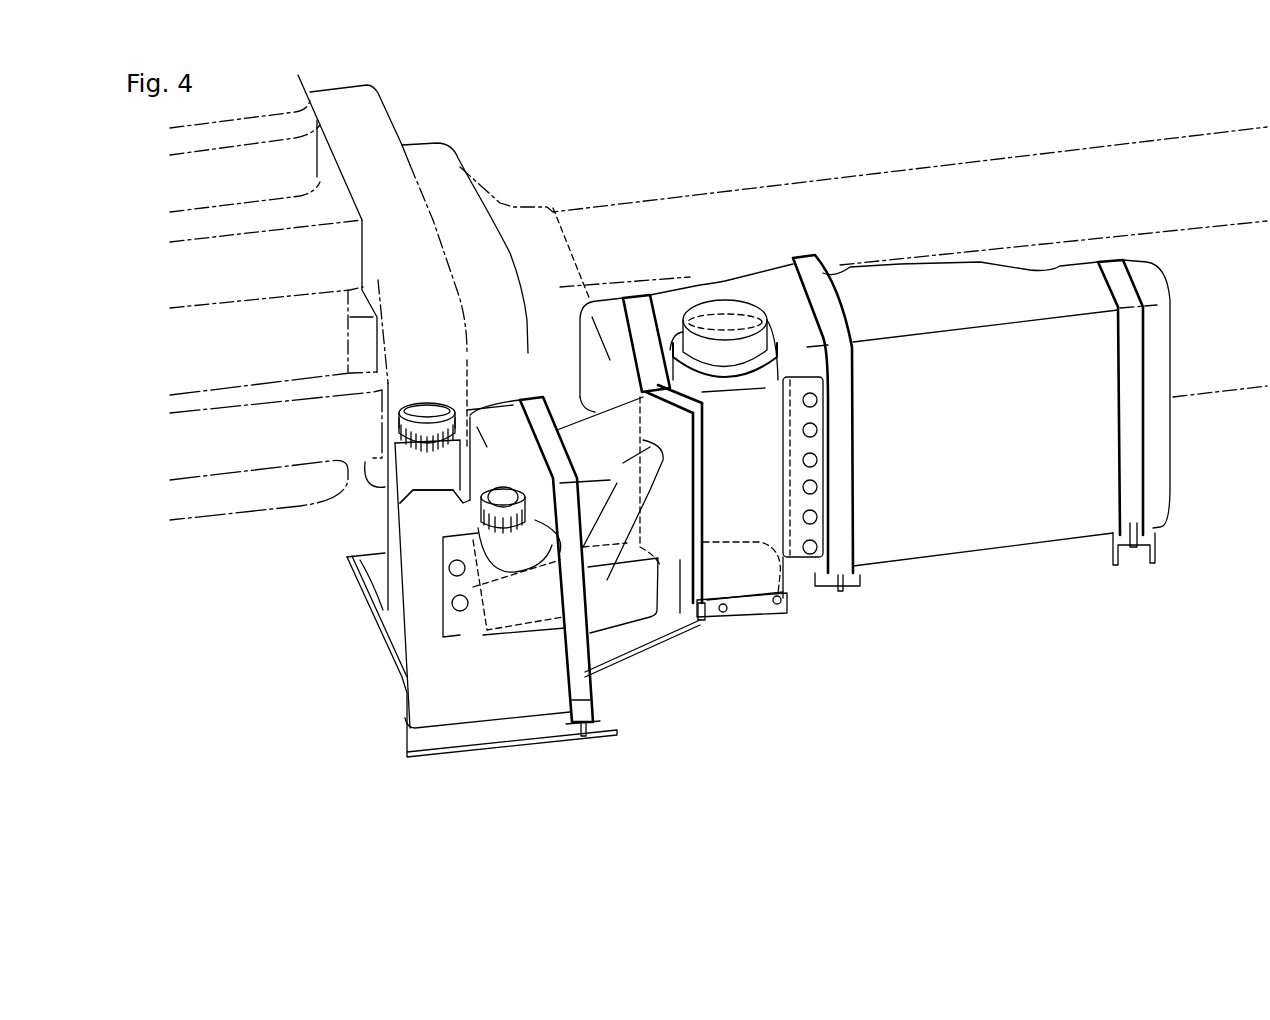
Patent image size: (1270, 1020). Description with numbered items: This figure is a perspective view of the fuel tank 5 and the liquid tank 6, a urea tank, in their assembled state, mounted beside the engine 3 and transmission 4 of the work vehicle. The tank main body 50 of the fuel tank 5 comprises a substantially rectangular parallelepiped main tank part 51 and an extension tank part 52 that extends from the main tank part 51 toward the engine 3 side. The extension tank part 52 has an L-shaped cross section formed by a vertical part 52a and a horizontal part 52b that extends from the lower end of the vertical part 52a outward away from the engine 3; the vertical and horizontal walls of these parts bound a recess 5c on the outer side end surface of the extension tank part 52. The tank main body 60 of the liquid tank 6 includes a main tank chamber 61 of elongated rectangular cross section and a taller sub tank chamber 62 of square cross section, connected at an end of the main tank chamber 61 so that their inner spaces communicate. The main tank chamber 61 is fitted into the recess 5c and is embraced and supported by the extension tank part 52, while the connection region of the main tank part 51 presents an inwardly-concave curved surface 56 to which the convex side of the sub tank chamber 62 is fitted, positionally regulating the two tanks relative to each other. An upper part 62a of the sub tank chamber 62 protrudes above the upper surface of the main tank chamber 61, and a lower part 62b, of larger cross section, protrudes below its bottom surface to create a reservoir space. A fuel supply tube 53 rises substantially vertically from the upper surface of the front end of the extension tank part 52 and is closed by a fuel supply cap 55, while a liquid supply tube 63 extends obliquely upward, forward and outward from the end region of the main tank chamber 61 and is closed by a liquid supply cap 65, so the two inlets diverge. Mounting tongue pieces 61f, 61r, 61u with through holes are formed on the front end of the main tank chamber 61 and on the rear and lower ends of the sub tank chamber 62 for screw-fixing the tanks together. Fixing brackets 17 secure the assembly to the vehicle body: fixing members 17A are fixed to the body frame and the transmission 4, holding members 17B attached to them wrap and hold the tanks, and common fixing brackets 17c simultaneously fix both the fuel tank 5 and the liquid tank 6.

The engine 3 is at (198, 520).
The transmission 4 is at (606, 207).
The fuel tank 5 is at (1170, 340).
The recess 5c is at (597, 567).
The liquid tank 6 is at (783, 580).
The fixing brackets 17 is at (845, 485).
The fixing members 17A is at (540, 730).
The holding members 17B is at (1135, 208).
The common fixing brackets 17c is at (580, 670).
The tank main body 50 is at (708, 529).
The main tank part 51 is at (1047, 533).
The extension tank part 52 is at (431, 568).
The vertical part 52a is at (507, 413).
The horizontal part 52b is at (463, 710).
The fuel supply tube 53 is at (417, 396).
The fuel supply cap 55 is at (432, 397).
The curved surface 56 is at (775, 348).
The tank main body 60 is at (615, 468).
The main tank chamber 61 is at (612, 470).
The mounting tongue piece 61f is at (460, 627).
The mounting tongue piece 61r is at (890, 454).
The mounting tongue piece 61u is at (733, 587).
The sub tank chamber 62 is at (791, 468).
The upper part 62a is at (747, 405).
The lower part 62b is at (747, 603).
The liquid supply tube 63 is at (464, 467).
The liquid supply cap 65 is at (503, 478).